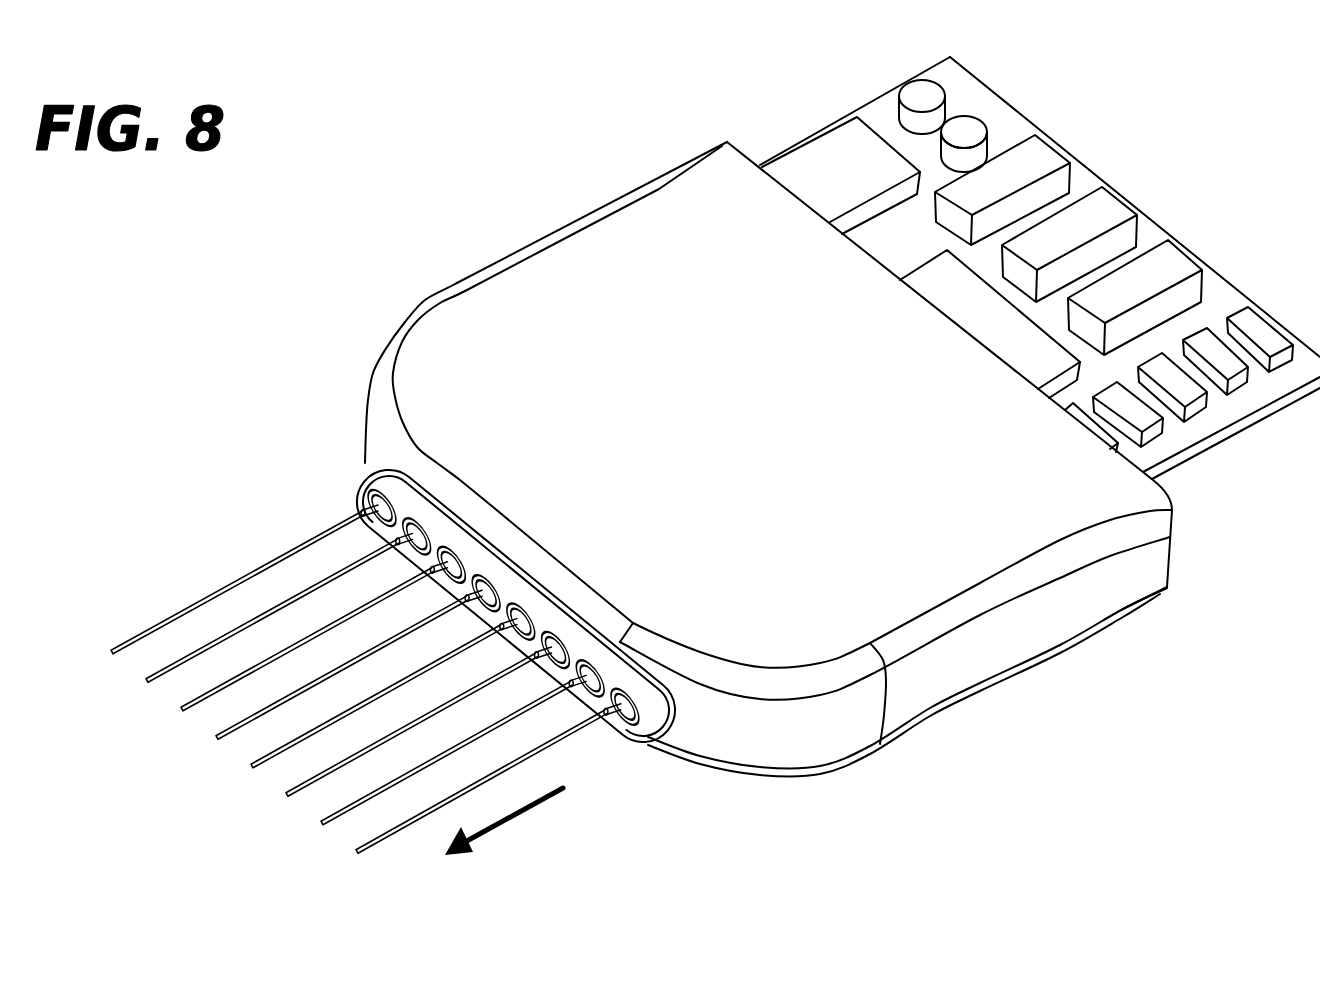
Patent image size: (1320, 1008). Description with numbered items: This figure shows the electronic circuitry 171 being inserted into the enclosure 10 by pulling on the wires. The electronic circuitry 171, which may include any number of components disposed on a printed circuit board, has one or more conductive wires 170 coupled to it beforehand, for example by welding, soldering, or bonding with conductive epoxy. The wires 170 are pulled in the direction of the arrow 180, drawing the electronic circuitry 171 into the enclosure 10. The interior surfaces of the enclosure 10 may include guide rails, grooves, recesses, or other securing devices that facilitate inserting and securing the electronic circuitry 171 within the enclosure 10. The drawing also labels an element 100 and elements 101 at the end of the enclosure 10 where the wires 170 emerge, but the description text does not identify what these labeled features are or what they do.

The enclosure 10 is at (1013, 632).
The connector 100 is at (700, 735).
The socket 101 is at (633, 737).
The conductive wires 170 is at (353, 873).
The electronic circuitry 171 is at (1165, 164).
The arrow 180 is at (504, 821).